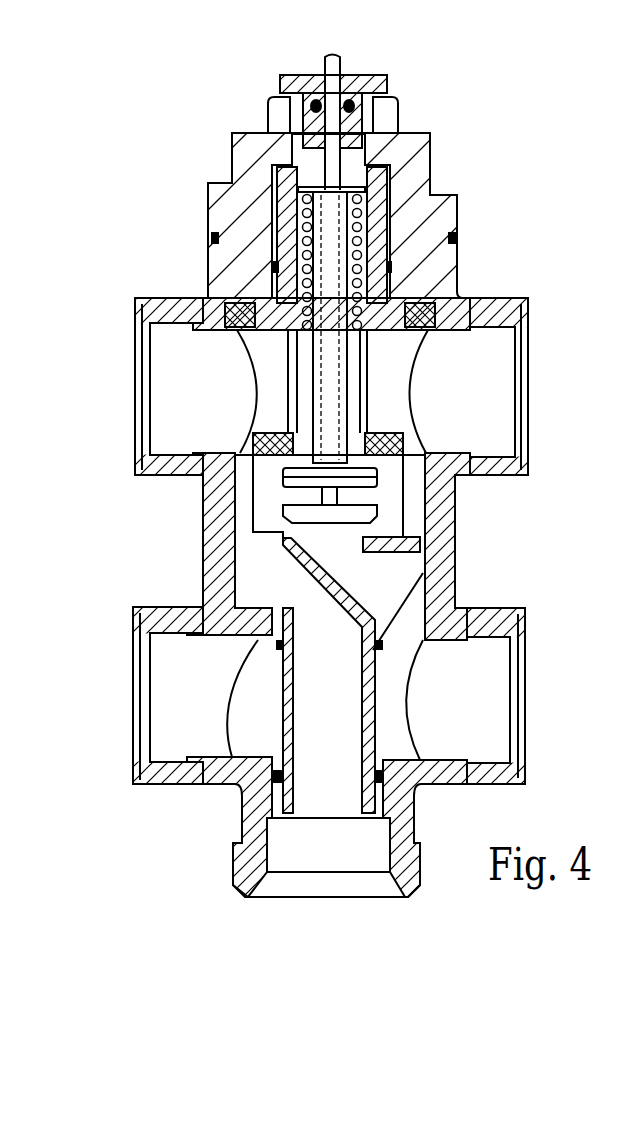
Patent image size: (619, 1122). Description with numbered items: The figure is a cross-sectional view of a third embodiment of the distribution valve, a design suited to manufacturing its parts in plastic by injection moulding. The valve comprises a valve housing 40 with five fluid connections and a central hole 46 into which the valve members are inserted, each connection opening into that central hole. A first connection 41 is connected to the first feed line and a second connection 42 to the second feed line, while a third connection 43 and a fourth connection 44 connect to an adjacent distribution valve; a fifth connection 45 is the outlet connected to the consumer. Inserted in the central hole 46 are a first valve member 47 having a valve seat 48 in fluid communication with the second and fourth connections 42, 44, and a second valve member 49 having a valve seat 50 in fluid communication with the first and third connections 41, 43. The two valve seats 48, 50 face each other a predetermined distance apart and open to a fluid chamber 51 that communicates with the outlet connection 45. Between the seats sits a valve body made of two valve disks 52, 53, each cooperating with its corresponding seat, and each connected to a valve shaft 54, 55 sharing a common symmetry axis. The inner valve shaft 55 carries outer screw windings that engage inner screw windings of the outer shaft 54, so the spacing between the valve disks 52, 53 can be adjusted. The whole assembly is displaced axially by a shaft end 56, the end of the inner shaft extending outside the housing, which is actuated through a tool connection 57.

The valve housing 40 is at (455, 485).
The first connection 41 is at (497, 300).
The second connection 42 is at (490, 790).
The third connection 43 is at (158, 298).
The fourth connection 44 is at (176, 790).
The fifth connection 45 is at (420, 858).
The central hole 46 is at (240, 565).
The first valve member 47 is at (250, 657).
The valve seat 48 is at (400, 560).
The second valve member 49 is at (253, 440).
The valve seat 50 is at (365, 440).
The fluid chamber 51 is at (330, 672).
The valve disk 52 is at (283, 478).
The valve disk 53 is at (283, 513).
The outer valve shaft 54 is at (300, 360).
The inner valve shaft 55 is at (330, 390).
The shaft end 56 is at (326, 62).
The tool connection 57 is at (340, 58).